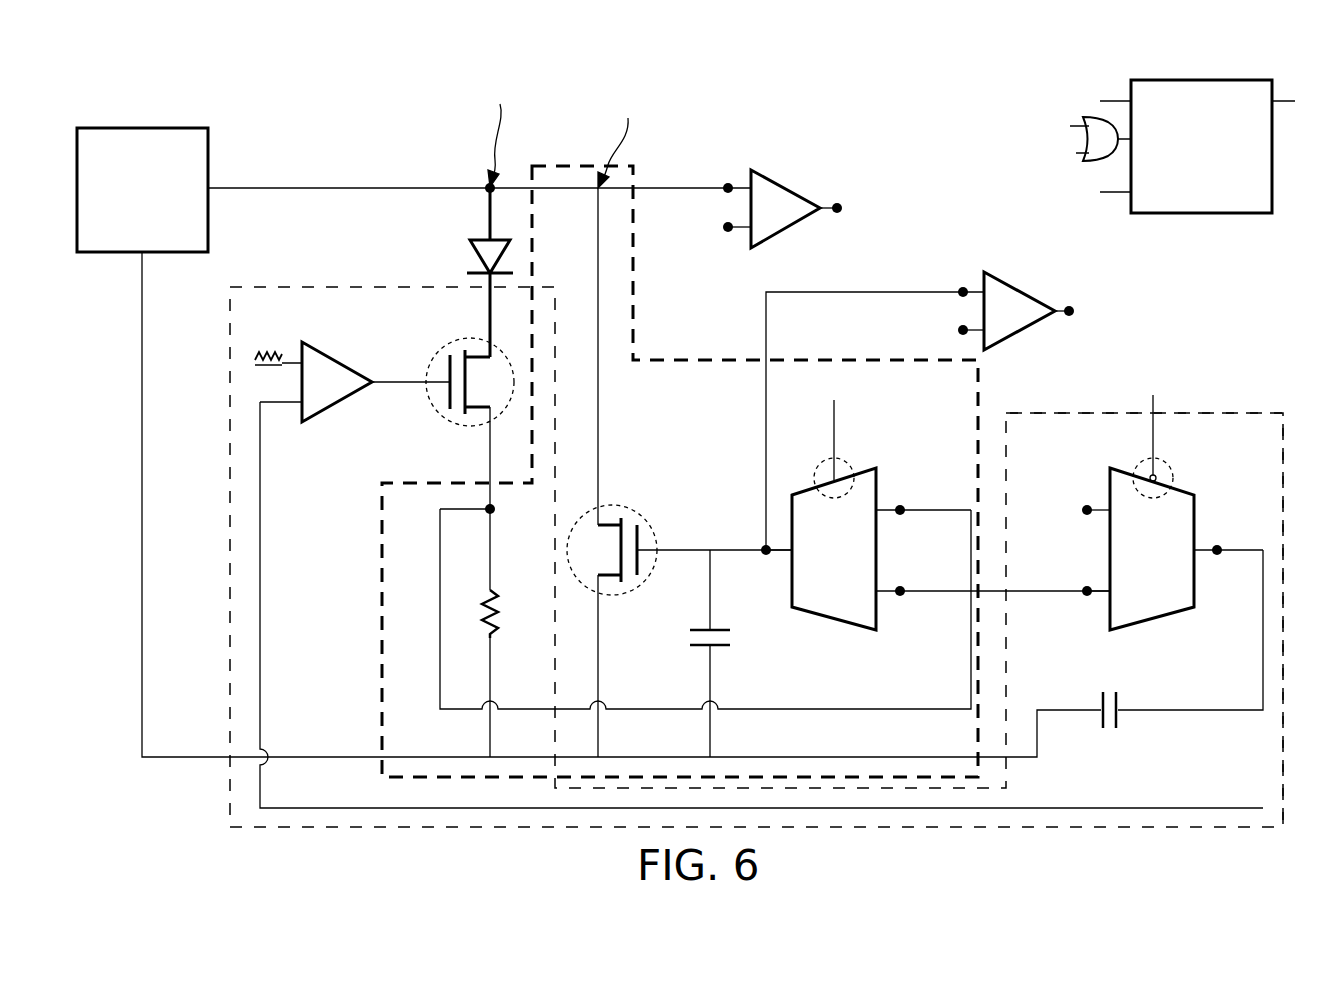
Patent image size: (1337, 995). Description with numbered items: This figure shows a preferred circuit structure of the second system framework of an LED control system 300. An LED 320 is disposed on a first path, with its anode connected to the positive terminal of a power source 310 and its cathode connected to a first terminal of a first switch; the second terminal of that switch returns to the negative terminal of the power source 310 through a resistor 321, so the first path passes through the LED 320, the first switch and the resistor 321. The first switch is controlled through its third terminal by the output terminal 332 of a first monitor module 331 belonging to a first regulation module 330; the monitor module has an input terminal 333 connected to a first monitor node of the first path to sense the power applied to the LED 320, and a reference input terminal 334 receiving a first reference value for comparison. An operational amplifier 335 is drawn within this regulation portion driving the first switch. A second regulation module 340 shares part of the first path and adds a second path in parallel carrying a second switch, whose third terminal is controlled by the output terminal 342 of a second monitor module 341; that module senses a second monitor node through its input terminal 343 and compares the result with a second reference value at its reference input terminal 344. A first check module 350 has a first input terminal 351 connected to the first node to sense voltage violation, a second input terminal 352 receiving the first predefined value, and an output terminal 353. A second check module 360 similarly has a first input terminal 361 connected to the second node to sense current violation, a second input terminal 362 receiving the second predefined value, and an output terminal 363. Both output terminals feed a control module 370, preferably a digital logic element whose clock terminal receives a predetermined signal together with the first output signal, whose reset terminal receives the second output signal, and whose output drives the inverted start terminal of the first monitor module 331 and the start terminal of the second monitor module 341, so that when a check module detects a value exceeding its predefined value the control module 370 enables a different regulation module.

The power supply circuit 300 is at (805, 89).
The power source 310 is at (142, 190).
The LED 320 is at (468, 259).
The resistor 321 is at (484, 612).
The first regulation module 330 is at (1222, 413).
The first monitor module 331 is at (1150, 625).
The output terminal 332 is at (1217, 545).
The input terminal 333 is at (1087, 598).
The reference input terminal 334 is at (1087, 505).
The operational amplifier 335 is at (333, 342).
The second regulation module 340 is at (574, 166).
The second monitor module 341 is at (830, 625).
The output terminal 342 is at (768, 558).
The input terminal 343 is at (900, 505).
The reference input terminal 344 is at (900, 598).
The first check module 350 is at (786, 176).
The first input terminal 351 is at (728, 185).
The second input terminal 352 is at (728, 232).
The output terminal 353 is at (838, 203).
The second check module 360 is at (1020, 282).
The first input terminal 361 is at (963, 288).
The second input terminal 362 is at (963, 336).
The output terminal 363 is at (1069, 306).
The control module 370 is at (1196, 80).